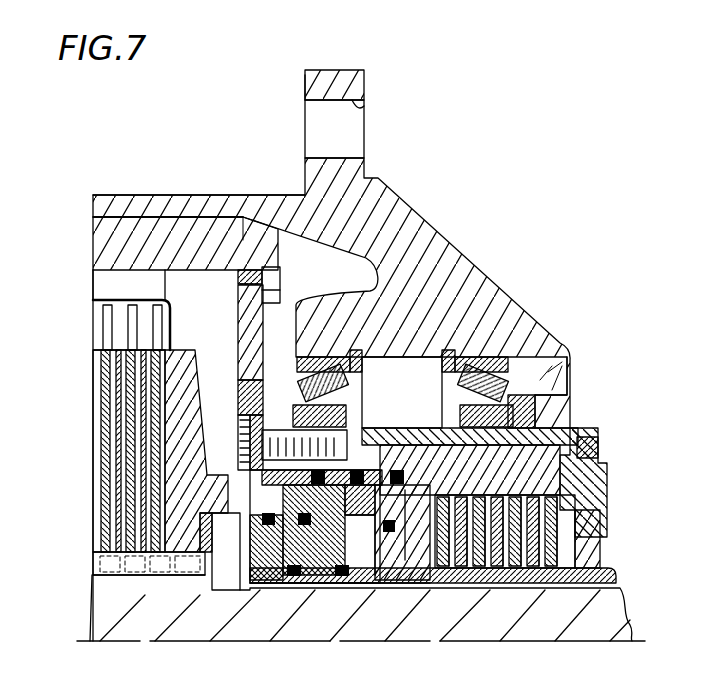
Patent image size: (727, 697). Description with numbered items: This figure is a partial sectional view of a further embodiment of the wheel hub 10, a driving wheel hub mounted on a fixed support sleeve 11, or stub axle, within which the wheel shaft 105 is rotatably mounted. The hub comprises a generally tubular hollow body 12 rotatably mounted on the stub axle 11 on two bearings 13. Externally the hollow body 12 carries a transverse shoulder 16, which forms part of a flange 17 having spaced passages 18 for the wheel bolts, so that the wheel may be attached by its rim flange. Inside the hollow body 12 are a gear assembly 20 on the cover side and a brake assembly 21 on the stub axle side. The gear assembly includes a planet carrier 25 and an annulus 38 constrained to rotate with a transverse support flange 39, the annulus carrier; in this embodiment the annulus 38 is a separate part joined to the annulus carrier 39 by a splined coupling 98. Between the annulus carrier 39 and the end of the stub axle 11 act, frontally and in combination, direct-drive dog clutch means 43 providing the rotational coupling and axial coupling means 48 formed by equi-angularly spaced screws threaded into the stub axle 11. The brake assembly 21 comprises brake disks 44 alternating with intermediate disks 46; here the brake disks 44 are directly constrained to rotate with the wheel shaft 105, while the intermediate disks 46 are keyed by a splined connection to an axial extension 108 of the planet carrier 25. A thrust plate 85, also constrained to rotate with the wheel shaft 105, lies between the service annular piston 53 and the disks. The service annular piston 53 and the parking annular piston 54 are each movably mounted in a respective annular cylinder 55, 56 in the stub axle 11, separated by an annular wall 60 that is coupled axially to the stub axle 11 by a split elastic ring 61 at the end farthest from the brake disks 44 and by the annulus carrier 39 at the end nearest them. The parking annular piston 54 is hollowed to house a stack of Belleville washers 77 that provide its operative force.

The wheel hub 10 is at (456, 158).
The fixed support sleeve 11 is at (604, 458).
The hollow body 12 is at (251, 194).
The bearings 13 is at (324, 352).
The transverse shoulder 16 is at (304, 82).
The flange 17 is at (345, 70).
The passages 18 is at (364, 108).
The gear assembly 20 is at (137, 230).
The brake assembly 21 is at (182, 240).
The planet carrier 25 is at (110, 298).
The annulus 38 is at (96, 240).
The transverse support flange 39 is at (262, 300).
The direct-drive dog clutch means 43 is at (340, 506).
The brake disks 44 is at (150, 505).
The intermediate disks 46 is at (158, 322).
The axial coupling means 48 is at (240, 430).
The service annular piston 53 is at (264, 592).
The parking annular piston 54 is at (618, 568).
The annular cylinder 55 is at (236, 510).
The annular cylinder 56 is at (402, 492).
The annular wall 60 is at (368, 558).
The split elastic ring 61 is at (432, 580).
The Belleville washers 77 is at (494, 496).
The thrust plate 85 is at (194, 348).
The splined coupling 98 is at (256, 268).
The wheel shaft 105 is at (361, 608).
The axial extension 108 is at (95, 305).